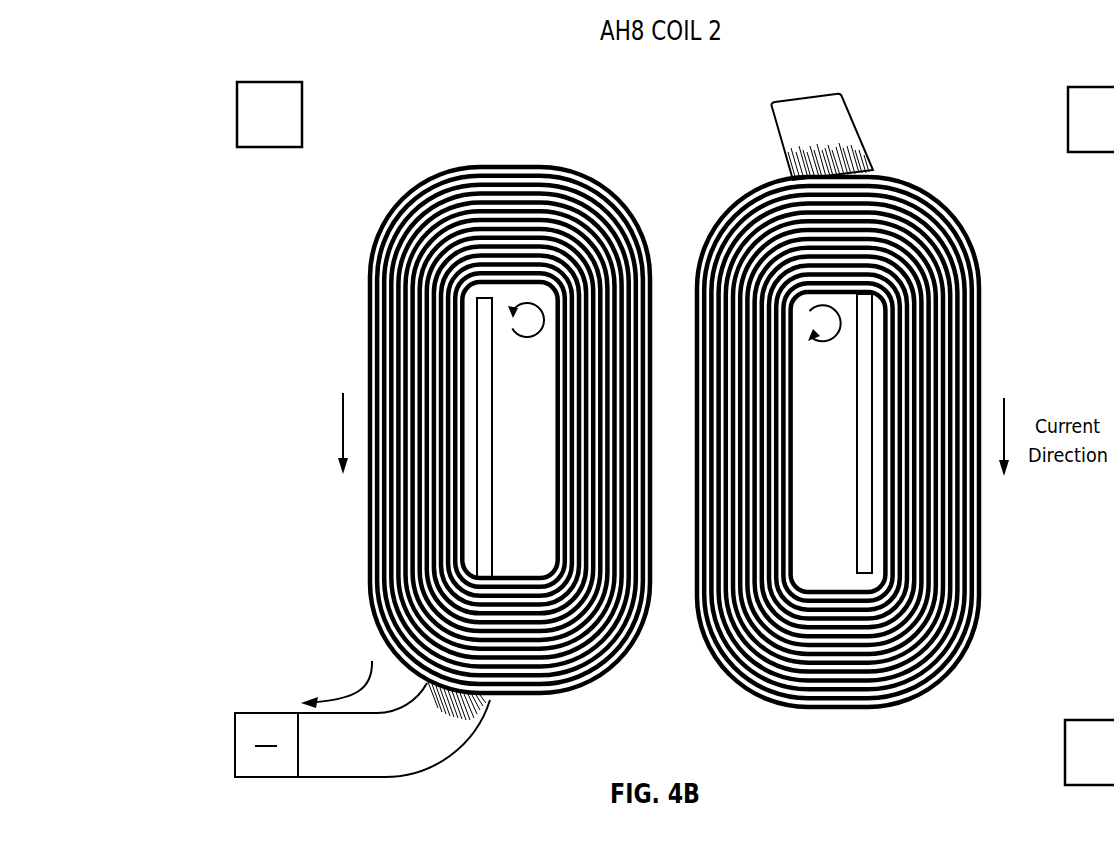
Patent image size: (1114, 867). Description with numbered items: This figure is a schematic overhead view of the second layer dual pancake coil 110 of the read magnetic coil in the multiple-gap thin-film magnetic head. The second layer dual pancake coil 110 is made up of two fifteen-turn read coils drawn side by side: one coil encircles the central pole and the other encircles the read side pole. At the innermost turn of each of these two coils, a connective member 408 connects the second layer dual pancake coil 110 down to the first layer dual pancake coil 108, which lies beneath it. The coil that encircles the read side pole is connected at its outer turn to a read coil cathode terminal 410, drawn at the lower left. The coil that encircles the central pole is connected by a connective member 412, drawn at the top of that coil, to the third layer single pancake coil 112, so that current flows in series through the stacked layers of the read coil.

The second layer dual pancake coil 110 is at (541, 168).
The first layer dual pancake coil 108 is at (550, 368).
The connective member 408 is at (499, 528).
The read coil cathode terminal 410 is at (247, 720).
The connective member 412 is at (856, 114).
The third layer single pancake coil 112 is at (809, 60).